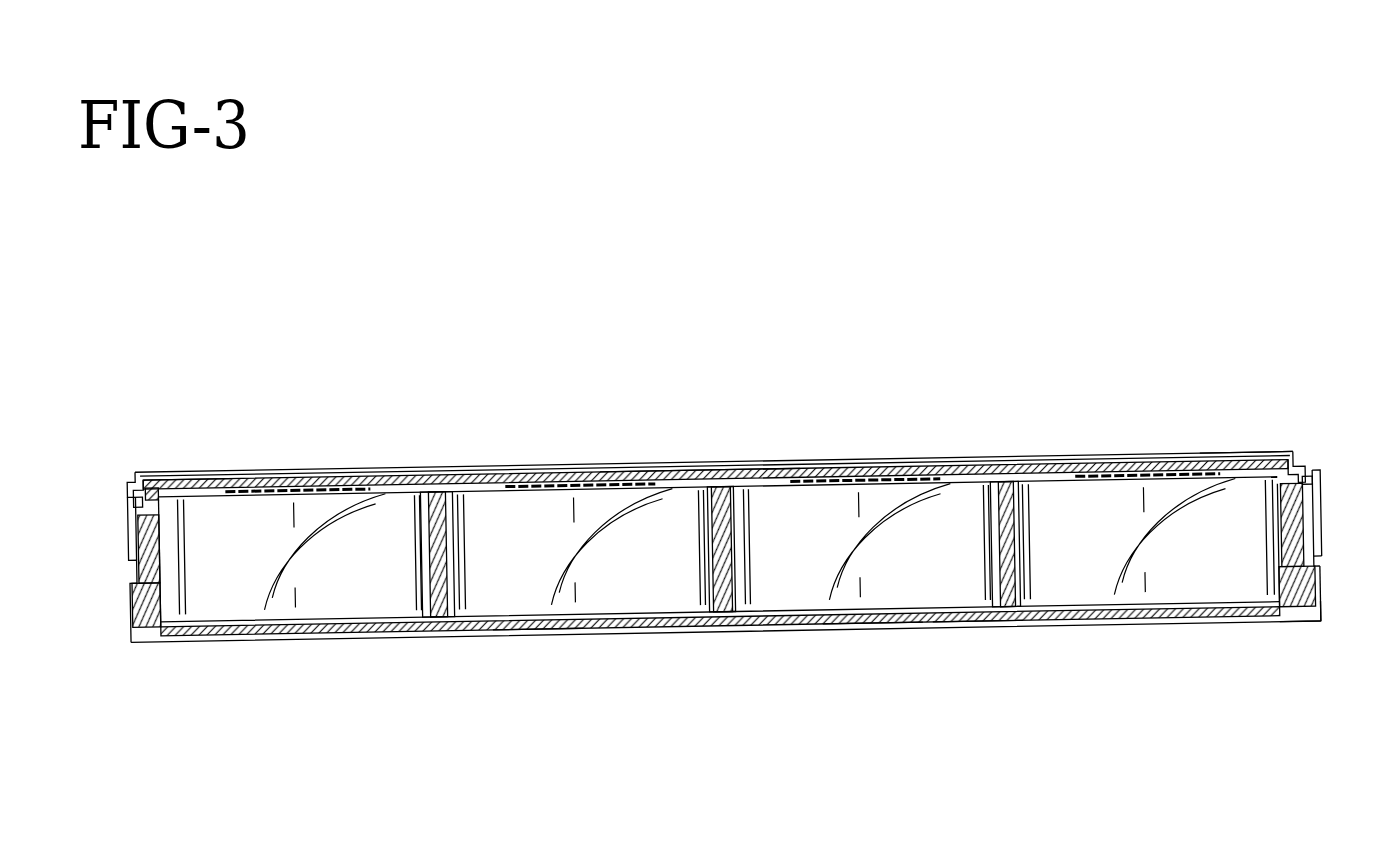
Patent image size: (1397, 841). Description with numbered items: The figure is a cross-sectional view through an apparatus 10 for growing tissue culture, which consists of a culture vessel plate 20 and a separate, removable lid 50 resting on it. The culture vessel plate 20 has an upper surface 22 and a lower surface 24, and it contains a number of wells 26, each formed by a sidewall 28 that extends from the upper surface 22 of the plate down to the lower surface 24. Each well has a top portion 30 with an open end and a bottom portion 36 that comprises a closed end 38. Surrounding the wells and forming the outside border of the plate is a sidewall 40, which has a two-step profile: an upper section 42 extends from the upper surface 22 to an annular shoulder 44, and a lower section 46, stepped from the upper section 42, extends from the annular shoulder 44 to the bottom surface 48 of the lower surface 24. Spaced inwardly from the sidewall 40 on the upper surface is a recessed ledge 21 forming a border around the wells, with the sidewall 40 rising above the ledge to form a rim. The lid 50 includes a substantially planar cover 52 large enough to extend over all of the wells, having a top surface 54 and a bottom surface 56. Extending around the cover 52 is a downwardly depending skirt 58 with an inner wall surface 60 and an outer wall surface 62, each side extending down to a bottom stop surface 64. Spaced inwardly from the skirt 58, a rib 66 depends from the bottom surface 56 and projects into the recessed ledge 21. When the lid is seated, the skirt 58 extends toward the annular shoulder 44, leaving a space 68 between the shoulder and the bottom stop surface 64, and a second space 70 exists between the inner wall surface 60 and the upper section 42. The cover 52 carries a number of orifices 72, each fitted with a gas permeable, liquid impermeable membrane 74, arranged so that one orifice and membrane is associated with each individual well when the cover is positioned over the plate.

The apparatus 10 is at (1042, 212).
The culture vessel plate 20 is at (603, 650).
The recessed ledge 21 is at (1312, 455).
The upper surface 22 is at (748, 464).
The lower surface 24 is at (868, 626).
The wells 26 is at (385, 632).
The sidewall 28 is at (673, 633).
The top portion 30 is at (437, 492).
The bottom portion 36 is at (536, 632).
The closed end 38 is at (973, 613).
The sidewall 40 is at (1313, 539).
The upper section 42 is at (1327, 506).
The annular shoulder 44 is at (1307, 552).
The lower section 46 is at (1317, 602).
The bottom surface 48 is at (1320, 629).
The lid 50 is at (704, 461).
The planar cover 52 is at (399, 478).
The top surface 54 is at (192, 481).
The bottom surface 56 is at (281, 494).
The skirt 58 is at (130, 486).
The inner wall surface 60 is at (140, 534).
The outer wall surface 62 is at (127, 506).
The bottom stop surface 64 is at (128, 564).
The rib 66 is at (157, 481).
The space 68 is at (130, 584).
The second space 70 is at (1318, 535).
The orifices 72 is at (252, 491).
The gas permeable, liquid impermeable membrane 74 is at (314, 483).